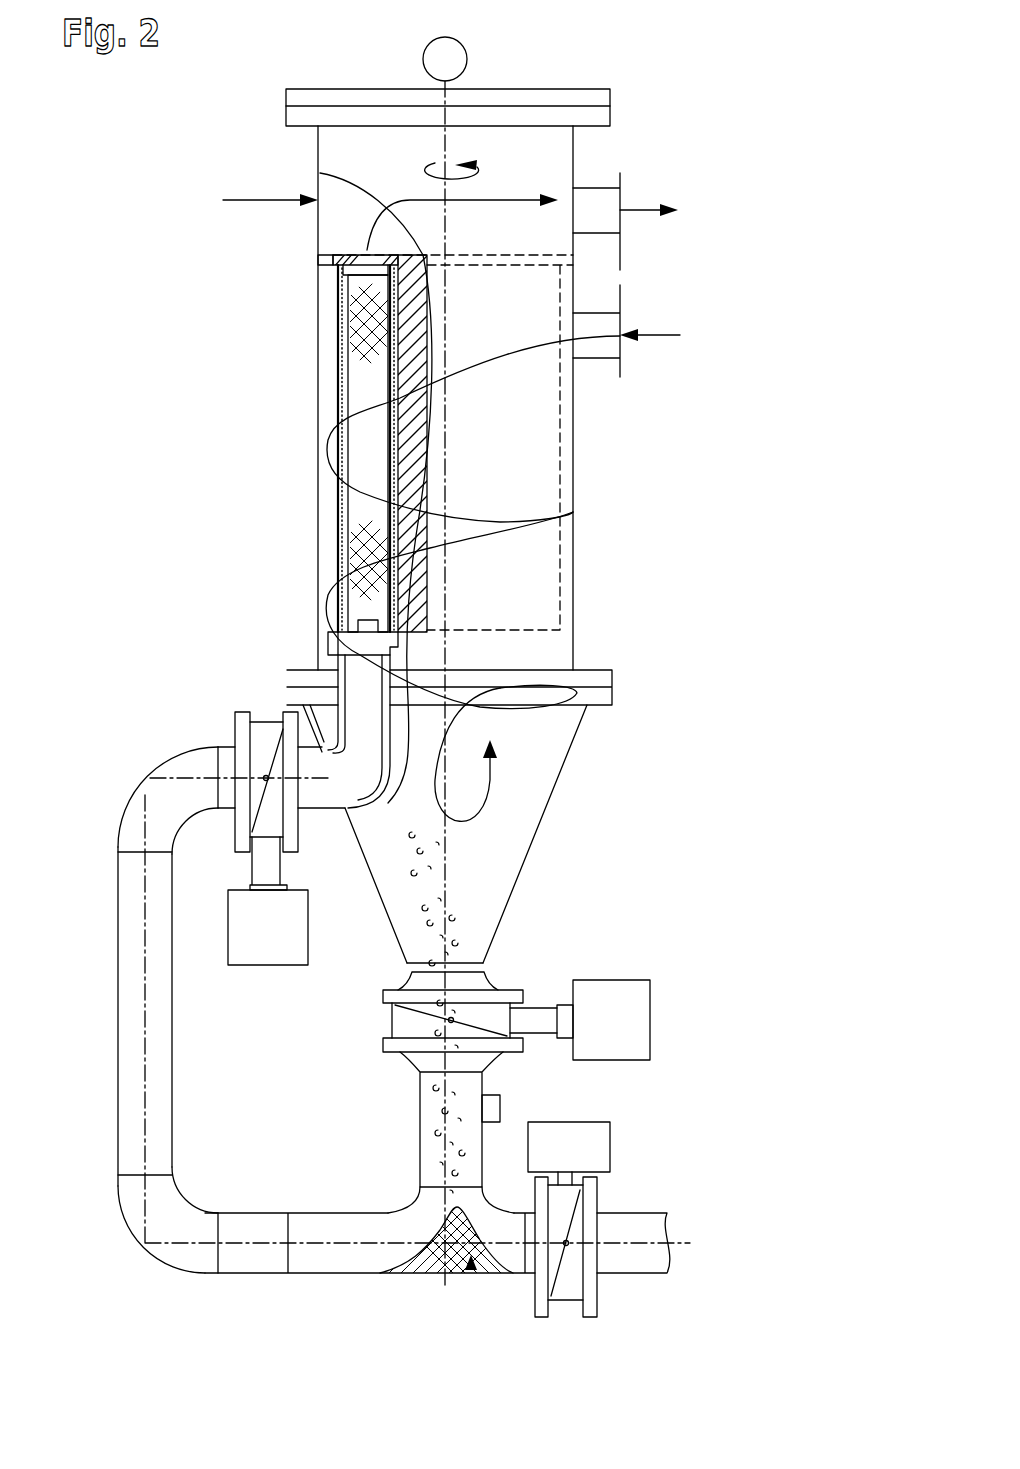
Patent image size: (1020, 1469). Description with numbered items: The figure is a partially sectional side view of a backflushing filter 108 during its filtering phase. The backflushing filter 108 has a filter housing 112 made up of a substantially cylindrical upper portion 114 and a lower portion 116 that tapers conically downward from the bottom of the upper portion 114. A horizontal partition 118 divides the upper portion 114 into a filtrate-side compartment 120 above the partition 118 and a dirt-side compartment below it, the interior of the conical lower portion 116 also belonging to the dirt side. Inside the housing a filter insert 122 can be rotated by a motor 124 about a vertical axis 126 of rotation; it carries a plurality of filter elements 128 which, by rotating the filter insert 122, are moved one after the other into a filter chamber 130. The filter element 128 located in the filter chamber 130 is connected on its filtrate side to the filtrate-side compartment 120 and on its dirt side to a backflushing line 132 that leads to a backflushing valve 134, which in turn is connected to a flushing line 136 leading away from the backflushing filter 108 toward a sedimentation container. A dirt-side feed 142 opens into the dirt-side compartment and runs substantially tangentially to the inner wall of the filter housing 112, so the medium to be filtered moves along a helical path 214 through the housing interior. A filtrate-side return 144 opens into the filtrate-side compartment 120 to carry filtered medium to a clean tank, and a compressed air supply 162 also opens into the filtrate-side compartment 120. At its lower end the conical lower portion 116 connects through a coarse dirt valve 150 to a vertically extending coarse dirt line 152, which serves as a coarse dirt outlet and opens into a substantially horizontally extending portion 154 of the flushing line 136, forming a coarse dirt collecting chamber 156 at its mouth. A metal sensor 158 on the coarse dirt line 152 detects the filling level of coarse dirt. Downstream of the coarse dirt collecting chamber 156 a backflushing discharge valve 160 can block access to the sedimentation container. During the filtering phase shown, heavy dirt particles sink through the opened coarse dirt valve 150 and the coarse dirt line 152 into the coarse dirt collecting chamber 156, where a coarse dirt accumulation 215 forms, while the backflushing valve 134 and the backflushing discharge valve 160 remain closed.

The backflushing filter 108 is at (262, 78).
The filter housing 112 is at (592, 507).
The upper portion 114 is at (577, 600).
The lower portion 116 is at (527, 834).
The horizontal partition 118 is at (507, 266).
The filtrate-side compartment 120 is at (547, 168).
The filter insert 122 is at (413, 440).
The motor 124 is at (466, 53).
The axis of rotation 126 is at (447, 223).
The filter elements 128 is at (352, 318).
The filter chamber 130 is at (335, 373).
The backflushing line 132 is at (340, 665).
The backflushing valve 134 is at (241, 968).
The flushing line 136 is at (176, 1256).
The dirt-side feed 142 is at (598, 358).
The filtrate-side return 144 is at (598, 187).
The coarse dirt valve 150 is at (397, 1027).
The coarse dirt line 152 is at (425, 1122).
The horizontally extending portion 154 is at (332, 1262).
The coarse dirt collecting chamber 156 is at (471, 1272).
The metal sensor 158 is at (516, 1103).
The backflushing discharge valve 160 is at (597, 1305).
The compressed air supply 162 is at (243, 204).
The helical path 214 is at (506, 528).
The coarse dirt accumulation 215 is at (405, 1262).